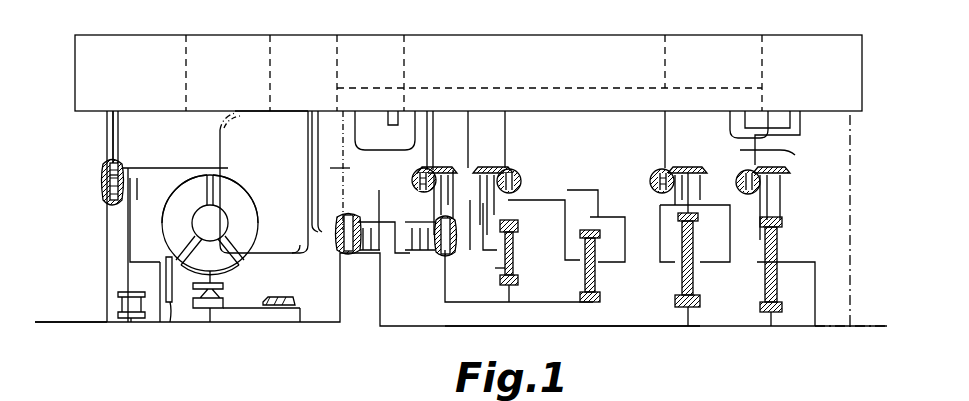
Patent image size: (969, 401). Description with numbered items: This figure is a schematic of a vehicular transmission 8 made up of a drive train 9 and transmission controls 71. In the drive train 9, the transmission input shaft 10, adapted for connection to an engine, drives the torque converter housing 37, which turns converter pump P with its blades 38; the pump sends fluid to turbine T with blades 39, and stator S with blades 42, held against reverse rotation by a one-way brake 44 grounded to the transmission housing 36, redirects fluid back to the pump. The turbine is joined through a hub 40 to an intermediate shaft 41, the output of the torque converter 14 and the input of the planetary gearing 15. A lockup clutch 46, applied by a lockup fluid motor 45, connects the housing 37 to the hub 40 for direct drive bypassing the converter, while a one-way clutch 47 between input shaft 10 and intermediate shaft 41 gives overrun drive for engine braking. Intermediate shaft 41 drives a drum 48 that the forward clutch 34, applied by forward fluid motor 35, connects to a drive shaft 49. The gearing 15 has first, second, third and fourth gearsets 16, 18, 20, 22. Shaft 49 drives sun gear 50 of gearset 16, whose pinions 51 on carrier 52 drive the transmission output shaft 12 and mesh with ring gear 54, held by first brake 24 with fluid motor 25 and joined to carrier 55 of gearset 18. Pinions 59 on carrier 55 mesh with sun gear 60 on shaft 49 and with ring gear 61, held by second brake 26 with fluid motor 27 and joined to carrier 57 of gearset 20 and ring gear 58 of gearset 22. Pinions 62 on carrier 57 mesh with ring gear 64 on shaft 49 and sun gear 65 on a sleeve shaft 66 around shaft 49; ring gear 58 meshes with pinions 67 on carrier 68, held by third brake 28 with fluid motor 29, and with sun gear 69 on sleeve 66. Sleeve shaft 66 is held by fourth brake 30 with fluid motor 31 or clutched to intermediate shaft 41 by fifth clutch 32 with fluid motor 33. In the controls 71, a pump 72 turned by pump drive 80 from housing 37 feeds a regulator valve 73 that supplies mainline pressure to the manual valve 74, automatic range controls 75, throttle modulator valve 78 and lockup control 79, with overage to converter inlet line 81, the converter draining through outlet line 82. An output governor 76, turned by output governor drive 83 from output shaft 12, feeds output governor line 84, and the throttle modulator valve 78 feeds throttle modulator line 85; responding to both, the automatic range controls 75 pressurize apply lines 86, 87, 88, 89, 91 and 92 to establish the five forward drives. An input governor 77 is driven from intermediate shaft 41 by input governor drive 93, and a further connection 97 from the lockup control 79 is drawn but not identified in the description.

The vehicular transmission 8 is at (62, 79).
The drive train 9 is at (70, 240).
The transmission input shaft 10 is at (76, 324).
The transmission output shaft 12 is at (857, 328).
The torque converter 14 is at (246, 166).
The planetary gearing 15 is at (606, 338).
The first gearset 16 is at (797, 253).
The second gearset 18 is at (705, 239).
The third gearset 20 is at (610, 257).
The fourth gearset 22 is at (527, 258).
The first range brake 24 is at (789, 188).
The first range fluid motor 25 is at (700, 190).
The second range brake 26 is at (707, 186).
The second range fluid motor 27 is at (656, 176).
The third range brake 28 is at (514, 176).
The third range fluid motor 29 is at (497, 223).
The fourth range brake 30 is at (423, 170).
The fourth range fluid motor 31 is at (420, 185).
The fifth range clutch 32 is at (418, 274).
The fifth range fluid motor 33 is at (445, 270).
The forward clutch 34 is at (347, 273).
The forward fluid motor 35 is at (345, 226).
The transmission housing 36 is at (271, 322).
The torque converter housing 37 is at (177, 166).
The pump blades 38 is at (236, 203).
The turbine blades 39 is at (183, 206).
The hub 40 is at (162, 275).
The intermediate shaft 41 is at (296, 326).
The stator blades 42 is at (230, 252).
The one-way brake 44 is at (206, 322).
The lockup fluid motor 45 is at (106, 186).
The lockup clutch 46 is at (106, 182).
The one-way clutch 47 is at (133, 323).
The drum 48 is at (374, 195).
The drive shaft 49 is at (430, 328).
The sun gear 50 is at (774, 328).
The pinions 51 is at (773, 275).
The carrier 52 is at (795, 264).
The ring gear 54 is at (772, 222).
The carrier 55 is at (710, 258).
The carrier 57 is at (567, 252).
The ring gear 58 is at (520, 210).
The pinions 59 is at (683, 270).
The sun gear 60 is at (695, 328).
The ring gear 61 is at (680, 215).
The pinions 62 is at (594, 286).
The ring gear 64 is at (590, 226).
The sun gear 65 is at (598, 298).
The sleeve shaft 66 is at (546, 328).
The pinions 67 is at (500, 268).
The carrier 68 is at (462, 263).
The sun gear 69 is at (504, 292).
The transmission controls 71 is at (630, 34).
The pump 72 is at (218, 50).
The regulator valve 73 is at (305, 46).
The manual valve 74 is at (695, 45).
The automatic range controls 75 is at (730, 120).
The output governor 76 is at (792, 50).
The input governor 77 is at (383, 42).
The throttle modulator valve 78 is at (346, 114).
The lockup control 79 is at (155, 42).
The pump drive 80 is at (242, 132).
The converter inlet line 81 is at (312, 185).
The converter outlet line 82 is at (172, 325).
The output governor drive 83 is at (856, 245).
The output governor line 84 is at (776, 134).
The throttle modulator line 85 is at (400, 128).
The first apply line 86 is at (792, 143).
The second apply line 87 is at (663, 127).
The third apply line 88 is at (512, 120).
The fourth apply line 89 is at (432, 125).
The fifth apply line 91 is at (466, 222).
The forward apply line 92 is at (349, 183).
The input governor drive 93 is at (312, 200).
The lockup line 97 is at (112, 128).